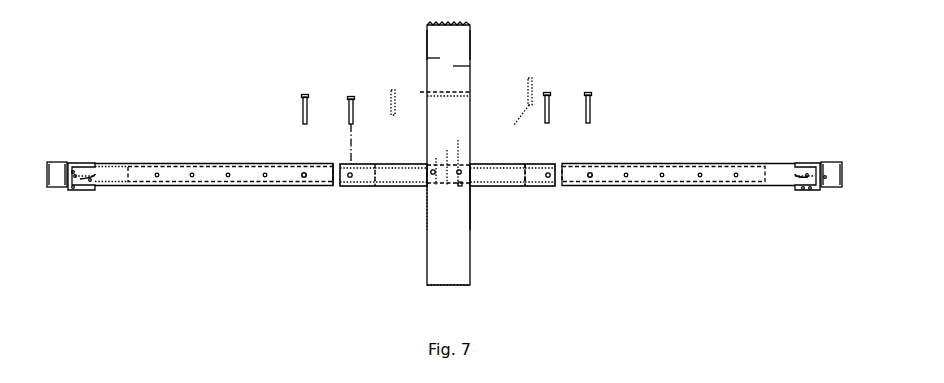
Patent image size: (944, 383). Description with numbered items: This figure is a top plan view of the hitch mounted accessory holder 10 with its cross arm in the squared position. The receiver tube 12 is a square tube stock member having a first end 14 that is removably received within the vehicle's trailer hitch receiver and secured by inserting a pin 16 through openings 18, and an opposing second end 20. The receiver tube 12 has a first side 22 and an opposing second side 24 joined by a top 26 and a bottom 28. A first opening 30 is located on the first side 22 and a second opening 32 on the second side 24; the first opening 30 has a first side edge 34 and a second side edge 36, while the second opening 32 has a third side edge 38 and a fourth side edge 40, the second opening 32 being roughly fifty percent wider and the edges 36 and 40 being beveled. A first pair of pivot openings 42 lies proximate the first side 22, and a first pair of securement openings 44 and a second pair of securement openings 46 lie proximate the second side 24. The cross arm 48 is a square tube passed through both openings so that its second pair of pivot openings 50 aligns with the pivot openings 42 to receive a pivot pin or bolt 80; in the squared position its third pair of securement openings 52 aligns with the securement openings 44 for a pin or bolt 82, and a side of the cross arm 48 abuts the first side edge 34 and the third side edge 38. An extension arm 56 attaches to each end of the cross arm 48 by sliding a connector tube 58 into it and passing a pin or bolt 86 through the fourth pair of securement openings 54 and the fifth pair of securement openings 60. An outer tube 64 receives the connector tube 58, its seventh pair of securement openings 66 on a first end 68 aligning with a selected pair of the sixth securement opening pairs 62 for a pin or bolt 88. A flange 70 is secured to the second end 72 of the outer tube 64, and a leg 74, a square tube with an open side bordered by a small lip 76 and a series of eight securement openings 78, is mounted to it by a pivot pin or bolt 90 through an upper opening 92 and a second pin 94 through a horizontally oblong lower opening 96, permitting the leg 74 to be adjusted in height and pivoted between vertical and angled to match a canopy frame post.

The hitch mounted accessory holder 10 is at (338, 252).
The receiver tube 12 is at (443, 77).
The first end 14 is at (443, 26).
The pin 16 is at (470, 92).
The openings 18 is at (470, 97).
The second end 20 is at (440, 286).
The first side 22 is at (427, 47).
The second side 24 is at (470, 46).
The top 26 is at (442, 58).
The bottom 28 is at (453, 66).
The first opening 30 is at (430, 170).
The second opening 32 is at (472, 181).
The first side edge 34 is at (427, 163).
The second side edge 36 is at (427, 190).
The third side edge 38 is at (472, 165).
The fourth side edge 40 is at (462, 187).
The first pair of pivot openings 42 is at (436, 159).
The first pair of securement openings 44 is at (458, 167).
The second pair of securement openings 46 is at (448, 167).
The cross arm 48 is at (511, 172).
The second pair of pivot openings 50 is at (426, 196).
The third pair of securement openings 52 is at (470, 211).
The fourth pair of securement openings 54 is at (349, 179).
The extension arm 56 is at (213, 163).
The connector tube 58 is at (340, 164).
The fifth pair of securement openings 60 is at (350, 186).
The sixth securement opening pairs 62 is at (193, 186).
The outer tube 64 is at (110, 183).
The seventh pair of securement openings 66 is at (304, 173).
The first end 68 is at (336, 181).
The flange 70 is at (88, 162).
The second end 72 is at (80, 178).
The leg 74 is at (57, 190).
The lip 76 is at (53, 164).
The securement openings 78 is at (73, 189).
The pivot pin or bolt 80 is at (393, 101).
The pin or bolt 82 is at (530, 79).
The pin or bolt 86 is at (351, 97).
The pin or bolt 88 is at (305, 96).
The pivot pin or bolt 90 is at (80, 180).
The upper opening 92 is at (90, 182).
The second pin 94 is at (73, 172).
The lower opening 96 is at (75, 176).